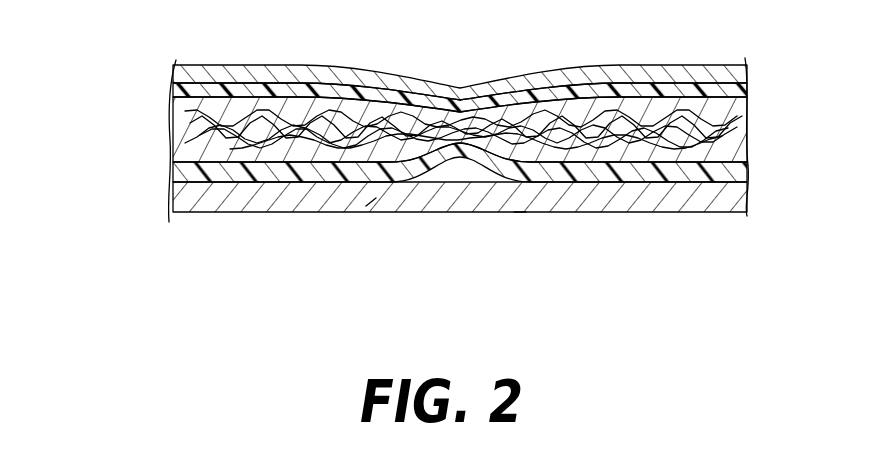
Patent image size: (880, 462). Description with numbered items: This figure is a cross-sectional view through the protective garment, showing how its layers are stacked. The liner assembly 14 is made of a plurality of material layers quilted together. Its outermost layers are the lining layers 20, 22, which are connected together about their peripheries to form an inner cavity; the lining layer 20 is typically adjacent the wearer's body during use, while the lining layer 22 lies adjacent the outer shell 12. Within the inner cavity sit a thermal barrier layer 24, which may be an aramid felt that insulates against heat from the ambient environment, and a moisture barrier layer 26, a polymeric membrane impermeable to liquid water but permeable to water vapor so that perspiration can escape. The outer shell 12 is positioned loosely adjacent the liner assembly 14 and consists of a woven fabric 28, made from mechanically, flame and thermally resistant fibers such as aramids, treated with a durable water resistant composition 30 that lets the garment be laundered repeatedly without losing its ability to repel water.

The outer shell 12 is at (166, 221).
The liner assembly 14 is at (140, 135).
The lining layer 20 is at (622, 73).
The lining layer 22 is at (750, 170).
The thermal barrier layer 24 is at (748, 127).
The moisture barrier layer 26 is at (173, 93).
The woven fabric 28 is at (372, 202).
The durable water resistant composition 30 is at (520, 212).